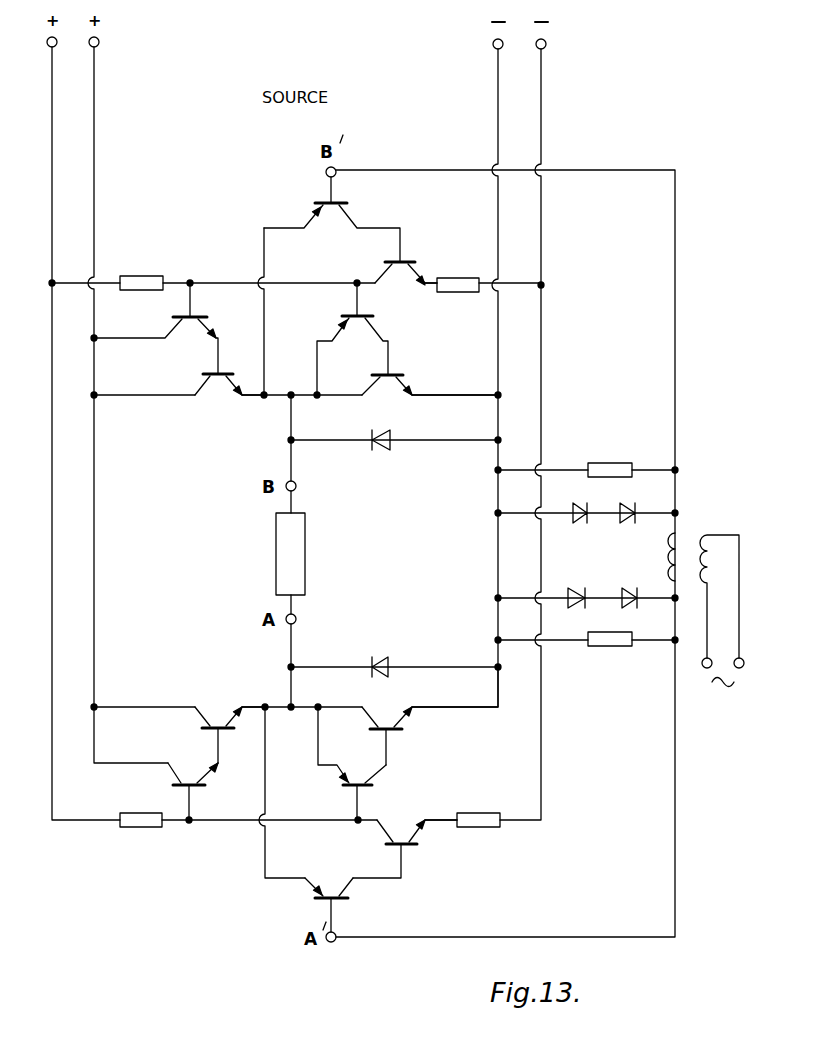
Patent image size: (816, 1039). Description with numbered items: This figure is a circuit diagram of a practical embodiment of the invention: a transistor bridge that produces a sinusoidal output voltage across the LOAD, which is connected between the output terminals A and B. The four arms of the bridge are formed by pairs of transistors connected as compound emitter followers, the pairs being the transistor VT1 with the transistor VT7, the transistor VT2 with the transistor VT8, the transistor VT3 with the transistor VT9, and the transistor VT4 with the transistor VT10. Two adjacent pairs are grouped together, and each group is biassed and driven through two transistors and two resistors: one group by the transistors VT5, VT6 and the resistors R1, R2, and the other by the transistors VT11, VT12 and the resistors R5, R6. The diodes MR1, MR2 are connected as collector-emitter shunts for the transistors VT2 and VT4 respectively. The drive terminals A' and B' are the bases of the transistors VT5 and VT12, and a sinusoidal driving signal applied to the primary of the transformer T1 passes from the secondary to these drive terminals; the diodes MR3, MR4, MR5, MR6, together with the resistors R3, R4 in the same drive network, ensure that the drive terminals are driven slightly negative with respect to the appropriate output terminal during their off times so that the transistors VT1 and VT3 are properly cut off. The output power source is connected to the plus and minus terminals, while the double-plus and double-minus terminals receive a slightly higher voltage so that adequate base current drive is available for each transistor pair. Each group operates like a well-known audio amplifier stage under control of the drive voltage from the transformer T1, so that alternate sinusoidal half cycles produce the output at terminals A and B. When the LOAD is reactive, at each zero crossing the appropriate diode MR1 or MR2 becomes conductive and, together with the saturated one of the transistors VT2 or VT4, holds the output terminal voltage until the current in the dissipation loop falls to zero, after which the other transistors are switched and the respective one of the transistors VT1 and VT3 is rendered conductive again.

The resistor R1 is at (141, 808).
The resistor R2 is at (478, 808).
The resistor R3 is at (610, 653).
The resistor R4 is at (610, 458).
The resistor R5 is at (141, 271).
The resistor R6 is at (458, 274).
The transistor VT1 is at (232, 709).
The transistor VT2 is at (394, 709).
The transistor VT3 is at (218, 386).
The transistor VT4 is at (407, 389).
The transistor VT5 is at (336, 882).
The transistor VT6 is at (402, 828).
The transistor VT7 is at (187, 764).
The transistor VT8 is at (360, 770).
The transistor VT9 is at (186, 330).
The transistor VT10 is at (356, 326).
The transistor VT11 is at (398, 270).
The transistor VT12 is at (332, 212).
The diode MR1 is at (382, 656).
The diode MR2 is at (378, 452).
The diode MR3 is at (564, 593).
The diode MR4 is at (612, 594).
The diode MR5 is at (570, 523).
The diode MR6 is at (620, 524).
The transformer T1 is at (706, 610).
The load LOAD is at (283, 550).